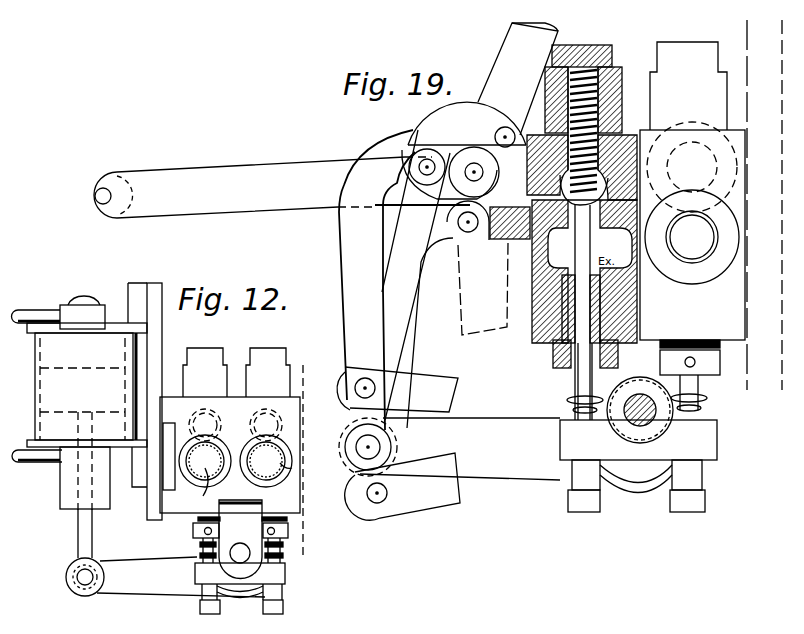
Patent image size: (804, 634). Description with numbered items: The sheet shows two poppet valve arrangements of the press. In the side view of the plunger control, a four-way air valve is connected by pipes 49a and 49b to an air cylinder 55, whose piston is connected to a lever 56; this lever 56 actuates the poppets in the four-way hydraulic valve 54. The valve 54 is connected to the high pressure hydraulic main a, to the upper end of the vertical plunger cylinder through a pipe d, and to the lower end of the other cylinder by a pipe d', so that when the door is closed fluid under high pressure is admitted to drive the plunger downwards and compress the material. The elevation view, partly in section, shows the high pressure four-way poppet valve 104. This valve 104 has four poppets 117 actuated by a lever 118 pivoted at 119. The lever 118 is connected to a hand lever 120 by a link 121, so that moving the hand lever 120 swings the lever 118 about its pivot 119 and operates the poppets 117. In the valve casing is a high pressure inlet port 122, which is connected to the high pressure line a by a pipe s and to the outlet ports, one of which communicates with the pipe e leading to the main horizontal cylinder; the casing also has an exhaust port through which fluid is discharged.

In FIG. 12, the pipe 49a is at (40, 320).
In FIG. 12, the pipe 49b is at (61, 461).
In FIG. 12, the four-way hydraulic valve 54 is at (231, 440).
In FIG. 12, the air cylinder 55 is at (87, 385).
In FIG. 12, the lever 56 is at (165, 553).
In FIG. 12, the high pressure hydraulic main a is at (205, 420).
In FIG. 12, the pipe d is at (266, 409).
In FIG. 12, the pipe d' is at (307, 469).
In FIG. 19, the valve 104 is at (718, 327).
In FIG. 19, the poppets 117 is at (576, 386).
In FIG. 19, the lever 118 is at (528, 465).
In FIG. 19, the pivot 119 is at (639, 432).
In FIG. 19, the hand lever 120 is at (282, 187).
In FIG. 19, the link 121 is at (448, 226).
In FIG. 19, the high pressure inlet port 122 is at (468, 314).
In FIG. 19, the pipe s is at (497, 139).
In FIG. 19, the pipe e is at (692, 203).